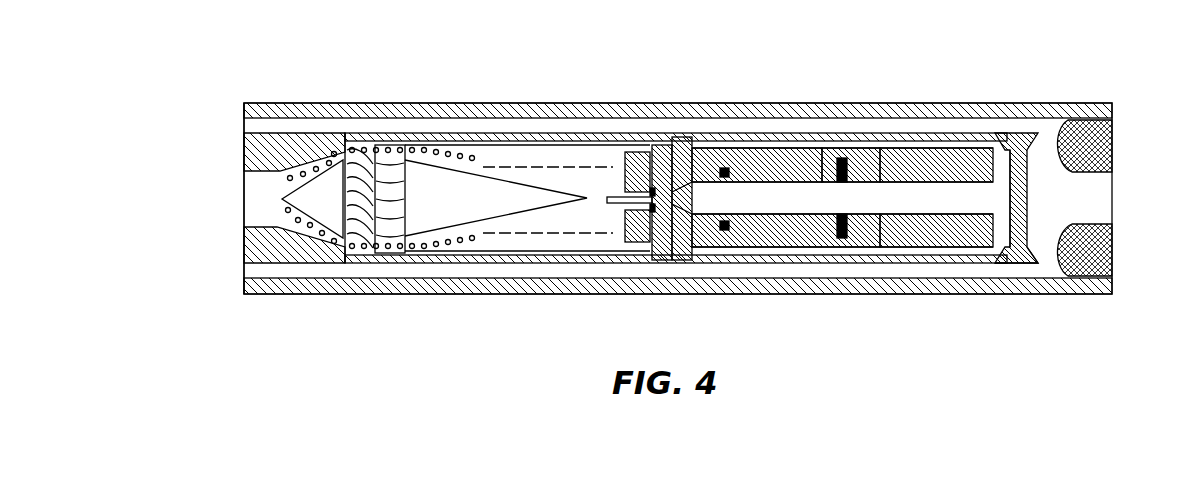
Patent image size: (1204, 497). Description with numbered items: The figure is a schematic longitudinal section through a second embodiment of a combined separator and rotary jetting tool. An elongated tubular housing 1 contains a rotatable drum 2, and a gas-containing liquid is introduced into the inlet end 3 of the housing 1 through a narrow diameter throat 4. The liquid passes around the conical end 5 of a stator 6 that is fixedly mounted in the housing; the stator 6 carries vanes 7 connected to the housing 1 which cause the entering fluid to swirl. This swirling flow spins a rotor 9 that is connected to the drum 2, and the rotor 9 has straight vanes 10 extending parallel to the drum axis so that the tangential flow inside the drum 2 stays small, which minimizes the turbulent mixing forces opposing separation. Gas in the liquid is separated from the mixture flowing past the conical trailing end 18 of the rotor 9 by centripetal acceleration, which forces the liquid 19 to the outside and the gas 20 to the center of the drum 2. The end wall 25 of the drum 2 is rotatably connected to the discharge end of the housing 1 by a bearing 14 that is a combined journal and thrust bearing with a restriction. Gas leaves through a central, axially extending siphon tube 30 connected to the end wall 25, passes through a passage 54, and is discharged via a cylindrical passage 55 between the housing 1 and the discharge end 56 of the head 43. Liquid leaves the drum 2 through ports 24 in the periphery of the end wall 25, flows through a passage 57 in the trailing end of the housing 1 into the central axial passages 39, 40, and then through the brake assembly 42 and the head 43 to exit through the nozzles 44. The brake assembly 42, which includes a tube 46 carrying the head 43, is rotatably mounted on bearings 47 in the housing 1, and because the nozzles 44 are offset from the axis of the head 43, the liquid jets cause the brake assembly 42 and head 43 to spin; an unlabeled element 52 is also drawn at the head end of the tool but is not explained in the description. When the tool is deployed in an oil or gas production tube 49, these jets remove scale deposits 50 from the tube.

The tubular housing 1 is at (521, 110).
The rotatable drum 2 is at (567, 148).
The inlet end 3 is at (244, 150).
The narrow diameter throat 4 is at (273, 232).
The conical end 5 is at (272, 294).
The stator 6 is at (345, 103).
The vanes 7 is at (364, 265).
The rotor 9 is at (385, 133).
The straight vanes 10 is at (395, 256).
The bearing 14 is at (625, 206).
The conical trailing end 18 is at (485, 220).
The liquid 19 is at (462, 128).
The gas 20 is at (550, 217).
The ports 24 is at (625, 242).
The end wall 25 is at (660, 148).
The siphon tube 30 is at (628, 152).
The central axial passage 39 is at (765, 183).
The central axial passage 40 is at (975, 183).
The brake assembly 42 is at (803, 150).
The head 43 is at (935, 167).
The nozzles 44 is at (1030, 130).
The tube 46 is at (845, 157).
The bearings 47 is at (724, 168).
The production tube 49 is at (972, 286).
The scale deposits 50 is at (1112, 150).
The cap center 52 is at (1020, 200).
The passage 54 is at (688, 140).
The cylindrical passage 55 is at (880, 250).
The discharge end 56 is at (1038, 265).
The passage 57 is at (676, 262).